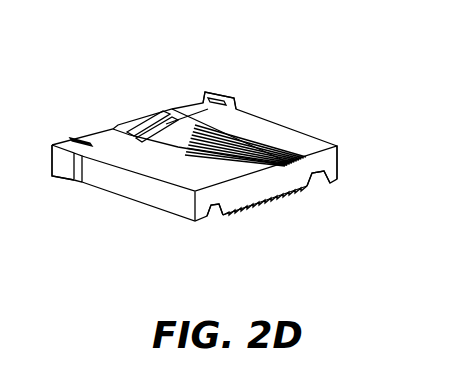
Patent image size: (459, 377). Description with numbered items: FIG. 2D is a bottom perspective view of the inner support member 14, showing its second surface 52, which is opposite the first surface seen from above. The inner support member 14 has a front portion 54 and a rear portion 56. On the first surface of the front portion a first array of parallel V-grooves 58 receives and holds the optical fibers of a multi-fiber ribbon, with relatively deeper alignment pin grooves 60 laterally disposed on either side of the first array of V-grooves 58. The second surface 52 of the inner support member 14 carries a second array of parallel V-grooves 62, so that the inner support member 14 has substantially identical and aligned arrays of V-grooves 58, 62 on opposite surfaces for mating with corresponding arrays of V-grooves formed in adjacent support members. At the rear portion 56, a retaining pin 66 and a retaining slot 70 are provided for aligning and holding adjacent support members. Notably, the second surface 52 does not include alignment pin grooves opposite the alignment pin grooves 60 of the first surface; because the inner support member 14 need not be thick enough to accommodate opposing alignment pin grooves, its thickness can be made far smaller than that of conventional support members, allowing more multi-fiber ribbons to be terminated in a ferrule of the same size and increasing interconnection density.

The inner support member 14 is at (281, 64).
The second surface 52 is at (263, 119).
The front portion 54 is at (344, 125).
The rear portion 56 is at (50, 193).
The first array of parallel V-grooves 58 is at (258, 205).
The alignment pin grooves 60 is at (205, 208).
The second array of parallel V-grooves 62 is at (263, 168).
The retaining pin 66 is at (60, 132).
The retaining slot 70 is at (204, 91).